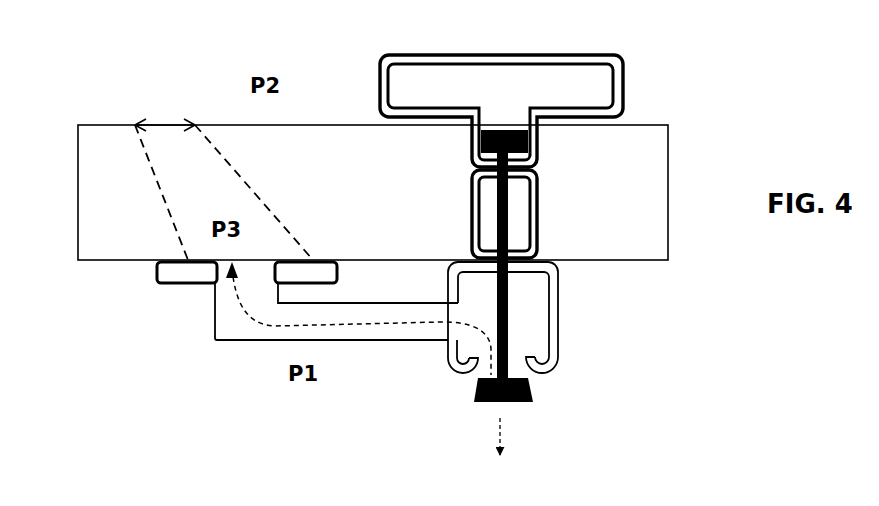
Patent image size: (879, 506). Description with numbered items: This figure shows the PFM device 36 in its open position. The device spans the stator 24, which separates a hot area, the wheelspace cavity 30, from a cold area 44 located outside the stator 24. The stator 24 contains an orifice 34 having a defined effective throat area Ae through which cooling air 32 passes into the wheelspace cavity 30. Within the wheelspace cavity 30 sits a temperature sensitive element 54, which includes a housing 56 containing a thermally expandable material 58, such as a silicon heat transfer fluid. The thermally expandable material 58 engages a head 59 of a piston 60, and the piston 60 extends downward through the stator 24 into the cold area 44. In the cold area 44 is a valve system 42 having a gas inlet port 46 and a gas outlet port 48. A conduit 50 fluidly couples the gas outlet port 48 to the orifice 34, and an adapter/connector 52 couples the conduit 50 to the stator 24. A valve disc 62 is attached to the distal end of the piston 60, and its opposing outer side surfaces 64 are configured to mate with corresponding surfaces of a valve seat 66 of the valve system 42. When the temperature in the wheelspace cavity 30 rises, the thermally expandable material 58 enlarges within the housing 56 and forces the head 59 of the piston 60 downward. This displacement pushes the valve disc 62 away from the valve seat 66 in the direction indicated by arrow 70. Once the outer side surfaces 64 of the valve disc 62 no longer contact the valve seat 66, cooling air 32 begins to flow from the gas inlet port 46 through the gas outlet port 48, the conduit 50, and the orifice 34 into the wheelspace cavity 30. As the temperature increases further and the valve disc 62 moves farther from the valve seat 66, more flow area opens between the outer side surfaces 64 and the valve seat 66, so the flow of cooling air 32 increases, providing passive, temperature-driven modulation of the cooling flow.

The stator 24 is at (670, 161).
The wheelspace cavity 30 is at (47, 73).
The cooling air 32 is at (266, 329).
The orifice 34 is at (224, 192).
The PFM device 36 is at (580, 222).
The valve system 42 is at (590, 328).
The cold area 44 is at (412, 317).
The gas inlet port 46 is at (521, 366).
The gas outlet port 48 is at (444, 331).
The conduit 50 is at (213, 328).
The adapter/connector 52 is at (165, 285).
The temperature sensitive element 54 is at (530, 222).
The housing 56 is at (622, 68).
The thermally expandable material 58 is at (500, 112).
The head 59 is at (529, 140).
The piston 60 is at (509, 218).
The valve disc 62 is at (497, 401).
The outer side surfaces 64 is at (477, 396).
The valve seat 66 is at (478, 368).
The arrow 70 is at (504, 433).
The effective throat area Ae is at (164, 118).